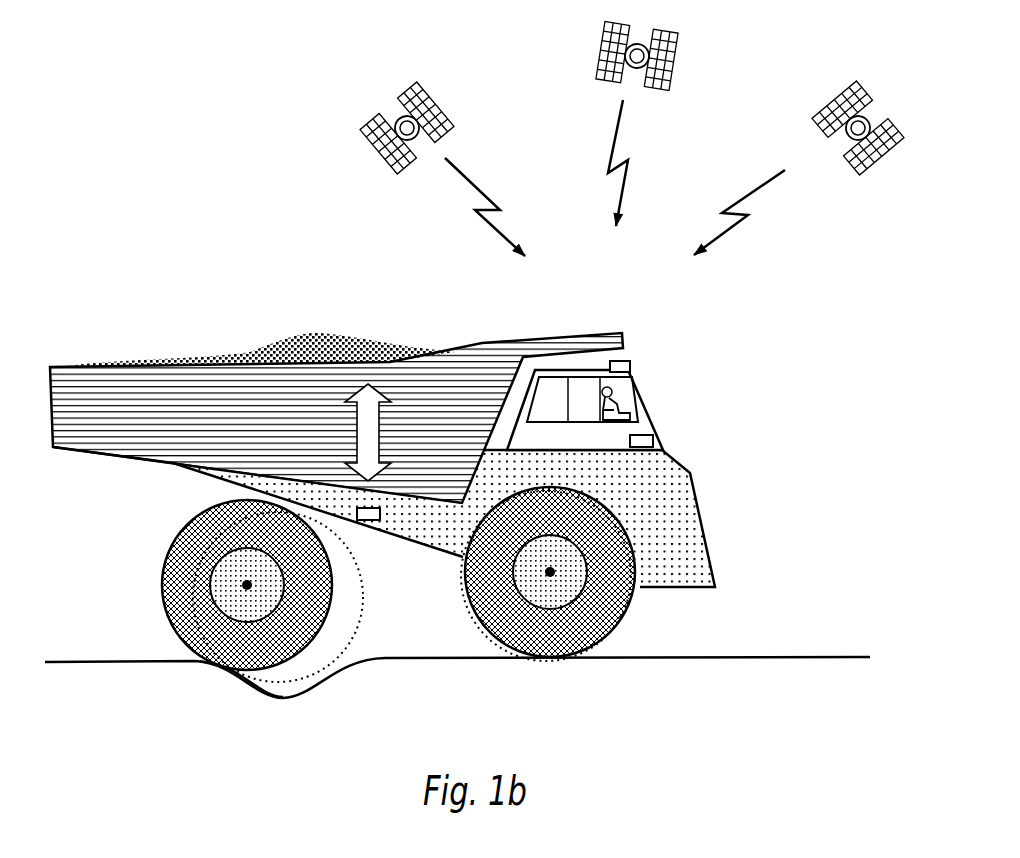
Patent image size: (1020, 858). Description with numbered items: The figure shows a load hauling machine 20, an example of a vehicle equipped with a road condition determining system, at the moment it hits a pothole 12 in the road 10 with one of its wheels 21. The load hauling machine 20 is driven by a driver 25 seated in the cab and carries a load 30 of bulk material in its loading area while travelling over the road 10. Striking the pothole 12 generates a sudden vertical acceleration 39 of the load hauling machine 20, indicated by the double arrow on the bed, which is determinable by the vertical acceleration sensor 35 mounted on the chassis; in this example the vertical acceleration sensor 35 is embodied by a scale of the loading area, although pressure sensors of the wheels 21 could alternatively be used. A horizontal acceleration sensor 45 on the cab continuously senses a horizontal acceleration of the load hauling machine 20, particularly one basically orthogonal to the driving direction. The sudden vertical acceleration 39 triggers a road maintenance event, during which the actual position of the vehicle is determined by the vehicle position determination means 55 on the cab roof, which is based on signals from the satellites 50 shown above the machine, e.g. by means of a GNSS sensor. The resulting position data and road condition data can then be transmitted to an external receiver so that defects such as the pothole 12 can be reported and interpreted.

The road 10 is at (693, 660).
The pothole 12 is at (276, 711).
The load hauling machine 20 is at (250, 238).
The wheels 21 is at (247, 638).
The driver 25 is at (615, 392).
The load 30 is at (172, 360).
The vertical acceleration sensor 35 is at (367, 521).
The vertical acceleration 39 is at (367, 400).
The horizontal acceleration sensor 45 is at (652, 434).
The satellite 50 is at (545, 52).
The vehicle position determination means 55 is at (632, 363).